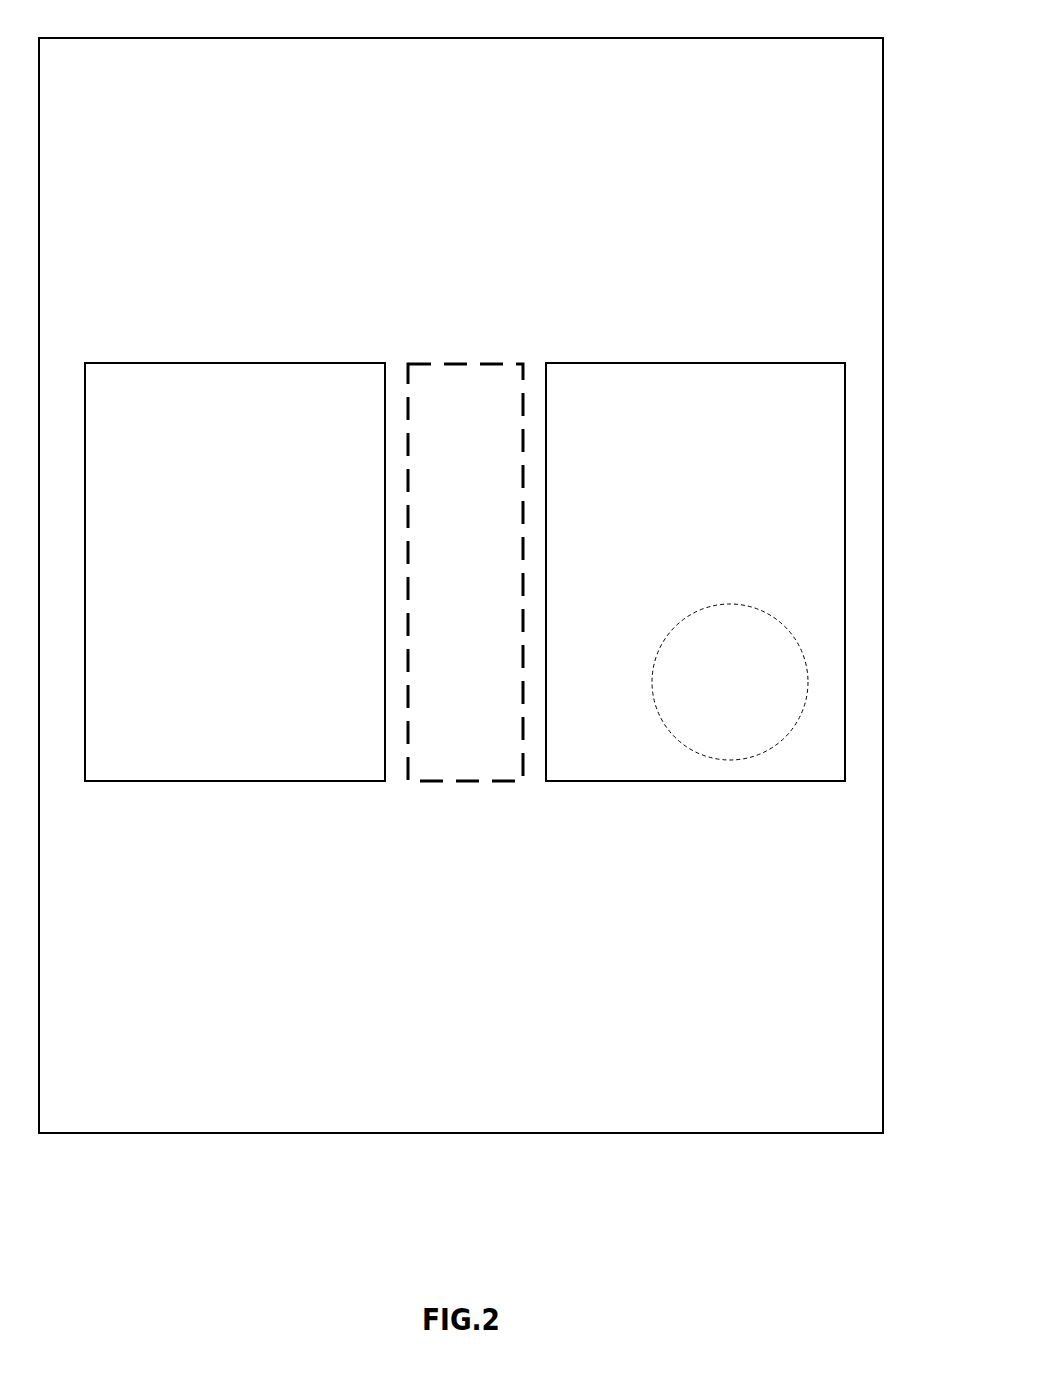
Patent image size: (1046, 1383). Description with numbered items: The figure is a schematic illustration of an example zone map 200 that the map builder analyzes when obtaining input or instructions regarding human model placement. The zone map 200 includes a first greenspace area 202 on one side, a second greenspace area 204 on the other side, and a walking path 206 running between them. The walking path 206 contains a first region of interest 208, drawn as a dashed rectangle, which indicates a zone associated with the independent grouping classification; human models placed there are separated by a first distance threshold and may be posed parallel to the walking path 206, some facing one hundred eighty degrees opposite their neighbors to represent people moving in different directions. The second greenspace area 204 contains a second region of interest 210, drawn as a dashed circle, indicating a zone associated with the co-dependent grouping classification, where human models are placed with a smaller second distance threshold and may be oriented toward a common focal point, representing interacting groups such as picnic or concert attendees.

The zone map 200 is at (677, 38).
The first greenspace area 202 is at (113, 363).
The second greenspace area 204 is at (745, 363).
The walking path 206 is at (448, 781).
The first region of interest 208 is at (470, 363).
The second region of interest 210 is at (733, 761).